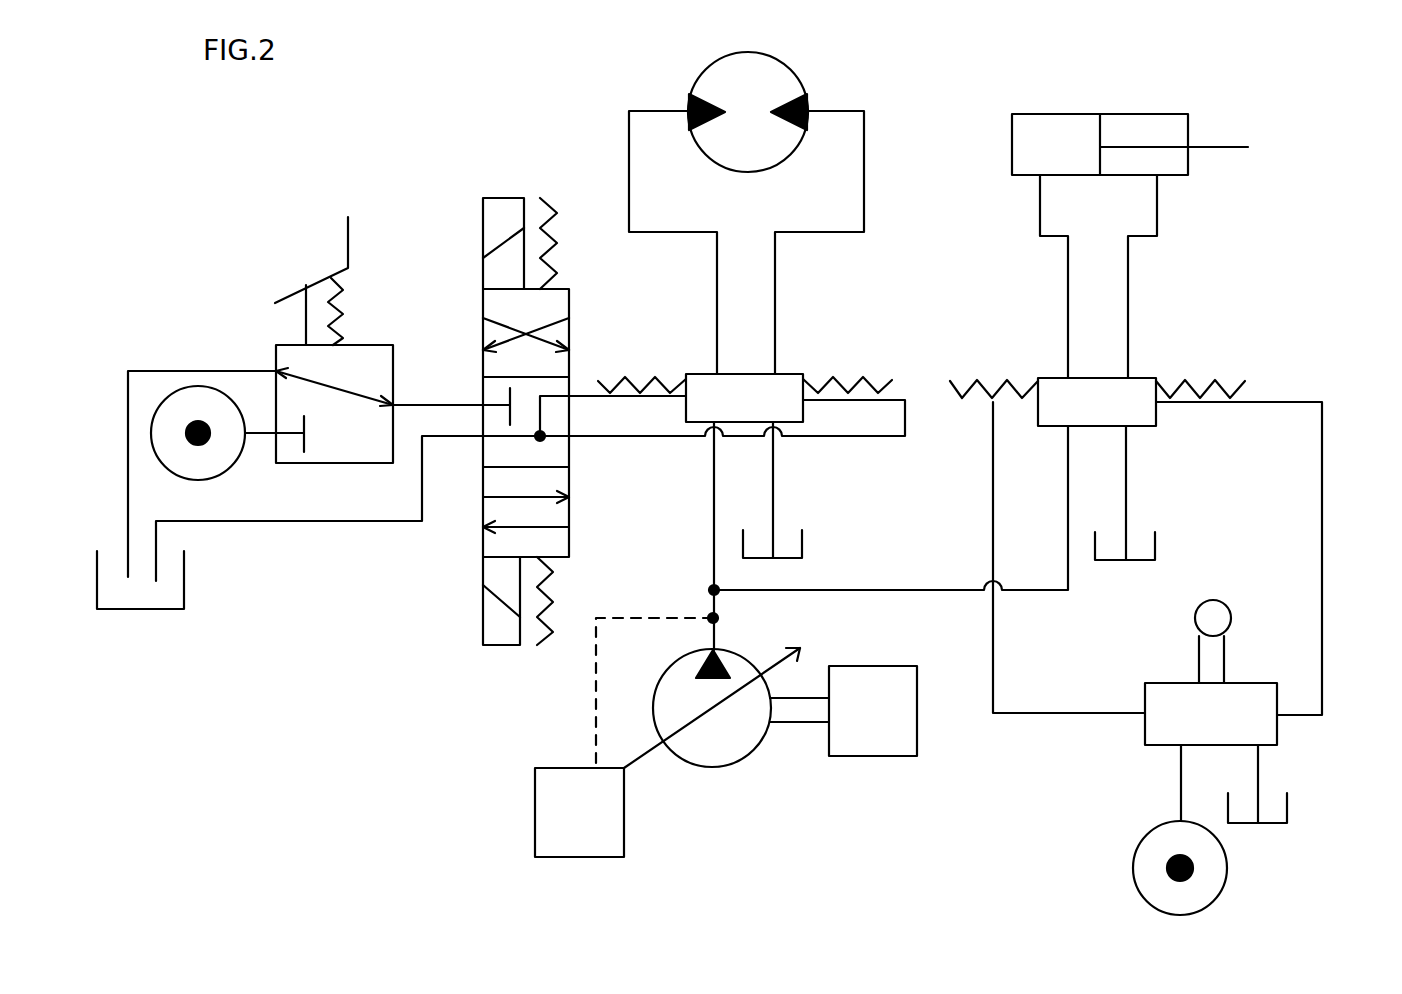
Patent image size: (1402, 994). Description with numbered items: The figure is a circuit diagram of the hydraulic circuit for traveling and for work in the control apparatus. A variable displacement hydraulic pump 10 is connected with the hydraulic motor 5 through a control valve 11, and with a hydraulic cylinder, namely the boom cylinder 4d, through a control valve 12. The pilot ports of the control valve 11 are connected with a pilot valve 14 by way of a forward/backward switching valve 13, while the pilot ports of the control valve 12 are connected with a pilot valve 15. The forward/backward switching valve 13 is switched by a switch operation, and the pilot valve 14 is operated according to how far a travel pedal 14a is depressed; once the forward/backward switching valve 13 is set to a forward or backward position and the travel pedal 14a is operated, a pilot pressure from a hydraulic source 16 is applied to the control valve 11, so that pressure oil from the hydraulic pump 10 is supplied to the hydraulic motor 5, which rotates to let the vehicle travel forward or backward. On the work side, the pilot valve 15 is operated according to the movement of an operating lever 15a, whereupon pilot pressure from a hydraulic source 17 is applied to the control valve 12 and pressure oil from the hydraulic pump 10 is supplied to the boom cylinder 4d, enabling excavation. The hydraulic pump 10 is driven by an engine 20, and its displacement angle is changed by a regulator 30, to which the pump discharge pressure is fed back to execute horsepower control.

The hydraulic motor 5 is at (697, 85).
The boom cylinder 4d is at (1192, 120).
The travel pedal 14a is at (348, 252).
The pilot valve 14 is at (393, 345).
The hydraulic source 16 is at (188, 383).
The forward/backward switching valve 13 is at (571, 289).
The control valve 11 is at (787, 374).
The control valve 12 is at (1140, 378).
The variable displacement hydraulic pump 10 is at (713, 770).
The engine 20 is at (880, 756).
The regulator 30 is at (535, 822).
The pilot valve 15 is at (1277, 697).
The operating lever 15a is at (1210, 600).
The hydraulic source 17 is at (1133, 863).